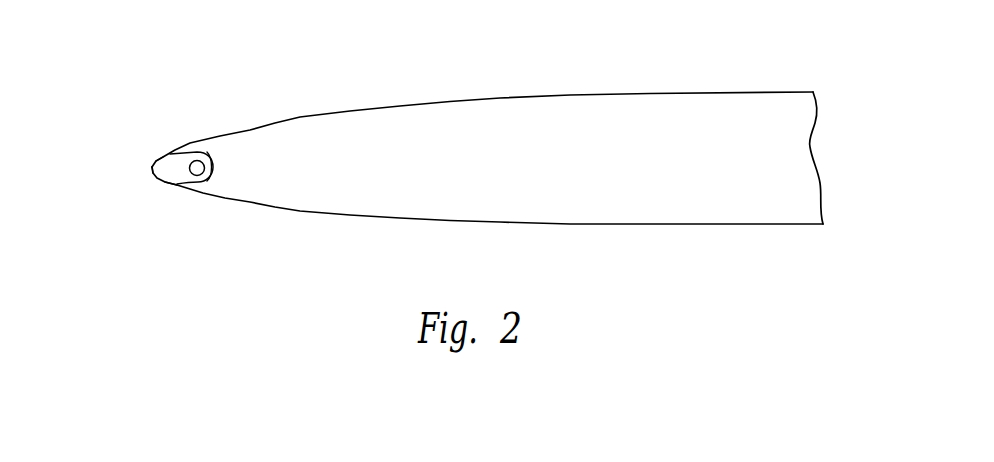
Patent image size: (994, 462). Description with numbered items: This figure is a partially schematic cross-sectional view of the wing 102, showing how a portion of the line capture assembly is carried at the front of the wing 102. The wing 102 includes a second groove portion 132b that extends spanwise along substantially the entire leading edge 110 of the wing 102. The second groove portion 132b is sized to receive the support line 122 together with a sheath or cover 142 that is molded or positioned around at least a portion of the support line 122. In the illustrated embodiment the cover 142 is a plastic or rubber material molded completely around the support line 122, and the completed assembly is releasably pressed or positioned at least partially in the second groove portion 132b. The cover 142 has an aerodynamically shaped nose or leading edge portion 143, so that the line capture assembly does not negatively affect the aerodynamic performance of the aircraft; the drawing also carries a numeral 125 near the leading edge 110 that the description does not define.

The wing 102 is at (617, 108).
The leading edge 110 is at (188, 136).
The leading edge 125 is at (154, 151).
The leading edge portion 143 is at (155, 171).
The cover 142 is at (173, 177).
The support line 122 is at (199, 174).
The second groove portion 132b is at (223, 170).